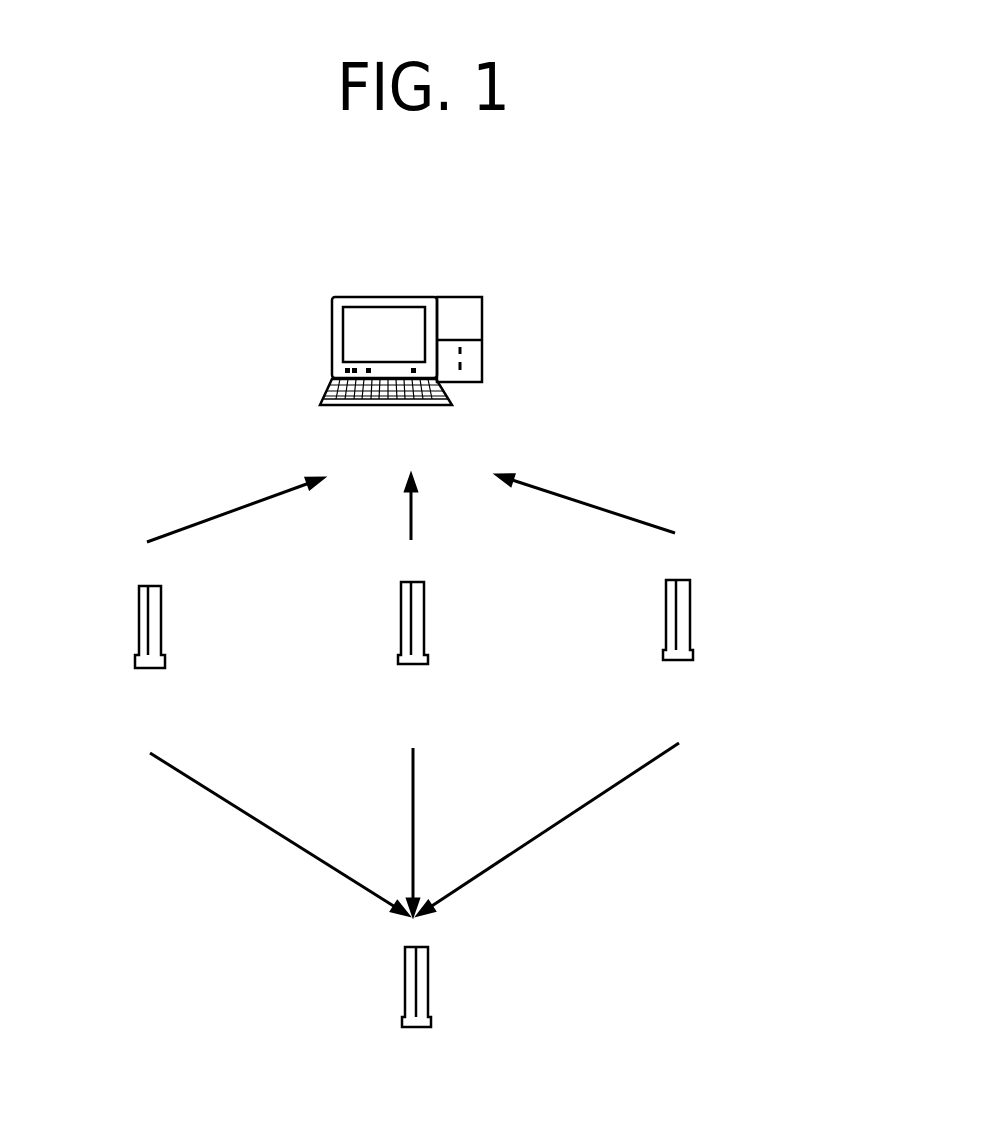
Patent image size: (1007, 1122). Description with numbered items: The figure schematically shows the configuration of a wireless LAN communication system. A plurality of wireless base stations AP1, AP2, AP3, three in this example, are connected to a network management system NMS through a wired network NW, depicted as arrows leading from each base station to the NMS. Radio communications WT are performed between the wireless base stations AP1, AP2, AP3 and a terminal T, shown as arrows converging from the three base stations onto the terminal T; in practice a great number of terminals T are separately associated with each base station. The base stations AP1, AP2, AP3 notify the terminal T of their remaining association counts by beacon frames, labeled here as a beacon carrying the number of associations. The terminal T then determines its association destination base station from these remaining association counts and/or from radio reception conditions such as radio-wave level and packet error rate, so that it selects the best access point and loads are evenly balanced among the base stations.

The network management system NMS is at (401, 374).
The wired network NW is at (277, 453).
The wireless base station AP1 is at (149, 665).
The wireless base station AP2 is at (416, 661).
The wireless base station AP3 is at (682, 658).
The radio communications WT is at (284, 865).
The terminal T is at (403, 983).